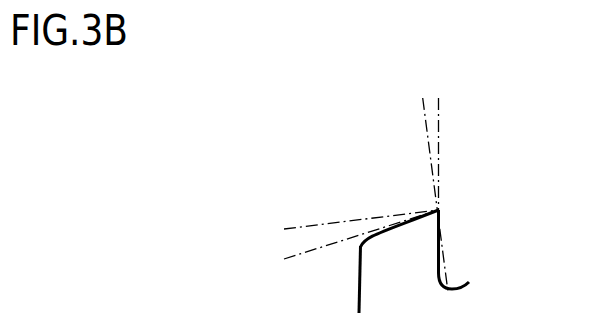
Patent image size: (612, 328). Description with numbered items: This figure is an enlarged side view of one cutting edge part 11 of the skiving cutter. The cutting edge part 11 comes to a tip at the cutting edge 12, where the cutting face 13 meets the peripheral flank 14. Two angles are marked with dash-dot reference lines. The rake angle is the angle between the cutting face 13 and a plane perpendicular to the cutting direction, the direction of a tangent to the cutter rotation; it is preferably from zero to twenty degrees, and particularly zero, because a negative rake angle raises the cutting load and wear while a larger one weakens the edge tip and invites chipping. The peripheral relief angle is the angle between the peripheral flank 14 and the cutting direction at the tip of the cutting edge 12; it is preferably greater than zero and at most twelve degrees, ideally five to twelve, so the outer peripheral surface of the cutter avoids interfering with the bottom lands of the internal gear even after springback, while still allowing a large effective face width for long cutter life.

The cutting edge part 11 is at (385, 190).
The cutting edge 12 is at (439, 209).
The cutting face 13 is at (439, 257).
The flank 14 is at (391, 215).